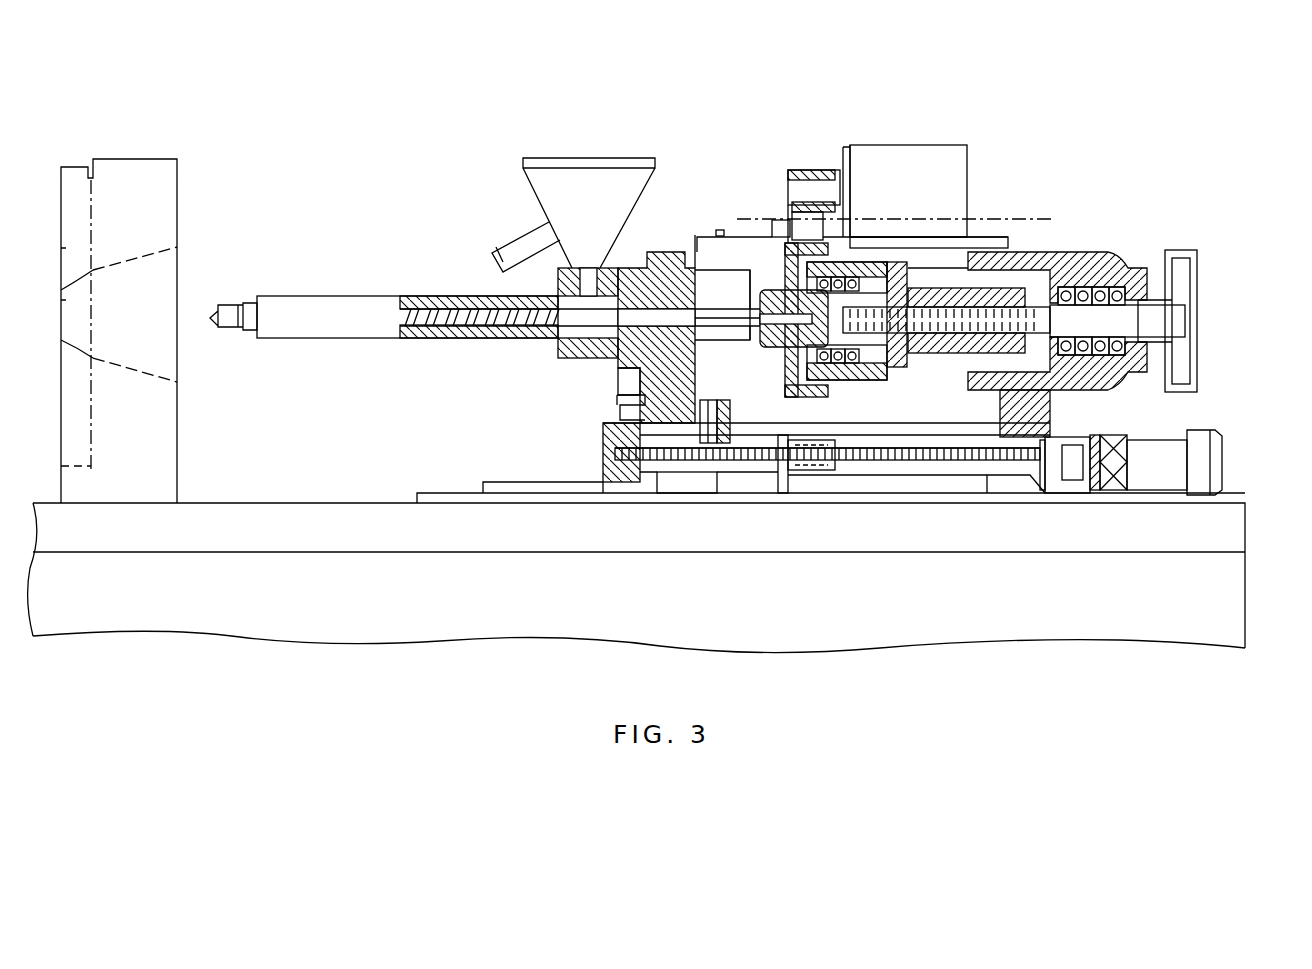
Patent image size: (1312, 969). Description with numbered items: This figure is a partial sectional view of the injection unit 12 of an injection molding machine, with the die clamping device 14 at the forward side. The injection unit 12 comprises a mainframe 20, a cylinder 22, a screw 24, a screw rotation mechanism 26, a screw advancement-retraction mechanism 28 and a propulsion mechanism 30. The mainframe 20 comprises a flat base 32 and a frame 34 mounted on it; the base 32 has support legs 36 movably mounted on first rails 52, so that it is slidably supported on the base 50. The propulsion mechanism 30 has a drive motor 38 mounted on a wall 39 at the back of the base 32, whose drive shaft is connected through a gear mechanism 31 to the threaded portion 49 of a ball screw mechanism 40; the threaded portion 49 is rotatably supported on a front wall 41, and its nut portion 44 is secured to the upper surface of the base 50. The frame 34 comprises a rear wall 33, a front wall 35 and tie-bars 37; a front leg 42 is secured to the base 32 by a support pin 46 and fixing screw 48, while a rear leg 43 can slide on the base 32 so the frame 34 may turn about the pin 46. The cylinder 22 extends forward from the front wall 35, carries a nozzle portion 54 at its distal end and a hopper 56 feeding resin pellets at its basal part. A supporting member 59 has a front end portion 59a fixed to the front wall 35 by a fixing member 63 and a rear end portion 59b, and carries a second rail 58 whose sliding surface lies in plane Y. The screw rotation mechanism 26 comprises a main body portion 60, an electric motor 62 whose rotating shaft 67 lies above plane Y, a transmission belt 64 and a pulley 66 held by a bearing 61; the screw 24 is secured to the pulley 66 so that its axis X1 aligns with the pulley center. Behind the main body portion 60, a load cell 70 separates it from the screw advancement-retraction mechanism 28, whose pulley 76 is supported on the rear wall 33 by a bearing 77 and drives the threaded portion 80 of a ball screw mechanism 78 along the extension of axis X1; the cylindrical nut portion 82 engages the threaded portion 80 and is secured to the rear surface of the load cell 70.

The injection unit 12 is at (730, 128).
The die clamping device 14 is at (138, 140).
The mainframe 20 is at (545, 419).
The cylinder 22 is at (346, 302).
The screw 24 is at (438, 302).
The screw rotation mechanism 26 is at (877, 105).
The screw advancement-retraction mechanism 28 is at (1154, 215).
The propulsion mechanism 30 is at (1240, 432).
The gear mechanism 31 is at (1074, 482).
The base 32 is at (921, 445).
The rear wall 33 is at (1100, 384).
The frame 34 is at (692, 357).
The front wall 35 is at (672, 252).
The support legs 36 is at (689, 483).
The tie-bars 37 is at (748, 328).
The drive motor 38 is at (1204, 463).
The wall 39 is at (1062, 480).
The ball screw mechanism 40 is at (832, 484).
The wall 41 is at (624, 492).
The front leg 42 is at (640, 384).
The rear leg 43 is at (1042, 402).
The nut portion 44 is at (786, 472).
The support pin 46 is at (716, 422).
The fixing screw 48 is at (617, 400).
The threaded portion 49 is at (945, 462).
The base 50 is at (1228, 573).
The first rails 52 is at (568, 493).
The nozzle portion 54 is at (229, 312).
The hopper 56 is at (588, 176).
The second rails 58 is at (774, 229).
The supporting member 59 is at (950, 237).
The front end portion 59a is at (697, 240).
The rear end portion 59b is at (996, 238).
The main body portion 60 is at (866, 372).
The bearing 61 is at (830, 372).
The electric motor 62 is at (928, 180).
The fixing member 63 is at (716, 232).
The transmission belt 64 is at (802, 230).
The pulley 66 is at (790, 385).
The rotating shaft 67 is at (809, 185).
The load cell 70 is at (896, 262).
The pulley 76 is at (1180, 300).
The bearing 77 is at (1100, 288).
The ball screw mechanism 78 is at (920, 258).
The threaded portion 80 is at (940, 335).
The nut portion 82 is at (938, 290).
The axis X1 is at (738, 312).
The plane Y is at (1052, 219).